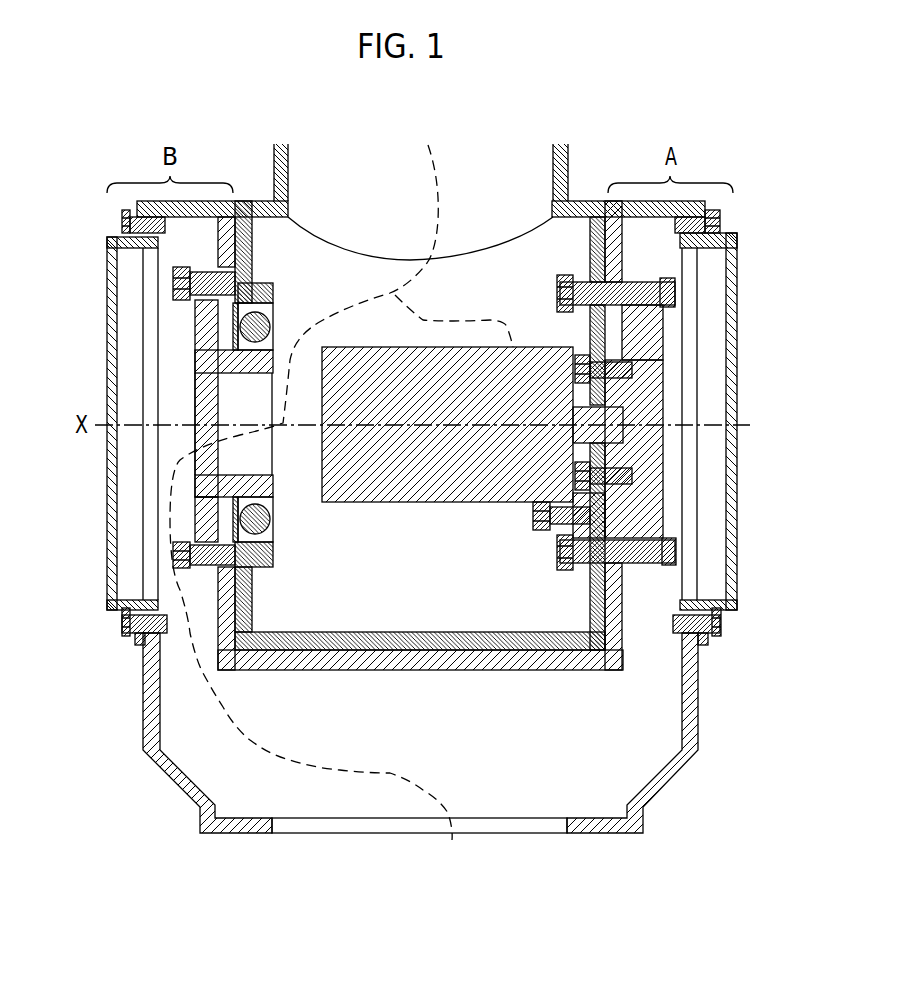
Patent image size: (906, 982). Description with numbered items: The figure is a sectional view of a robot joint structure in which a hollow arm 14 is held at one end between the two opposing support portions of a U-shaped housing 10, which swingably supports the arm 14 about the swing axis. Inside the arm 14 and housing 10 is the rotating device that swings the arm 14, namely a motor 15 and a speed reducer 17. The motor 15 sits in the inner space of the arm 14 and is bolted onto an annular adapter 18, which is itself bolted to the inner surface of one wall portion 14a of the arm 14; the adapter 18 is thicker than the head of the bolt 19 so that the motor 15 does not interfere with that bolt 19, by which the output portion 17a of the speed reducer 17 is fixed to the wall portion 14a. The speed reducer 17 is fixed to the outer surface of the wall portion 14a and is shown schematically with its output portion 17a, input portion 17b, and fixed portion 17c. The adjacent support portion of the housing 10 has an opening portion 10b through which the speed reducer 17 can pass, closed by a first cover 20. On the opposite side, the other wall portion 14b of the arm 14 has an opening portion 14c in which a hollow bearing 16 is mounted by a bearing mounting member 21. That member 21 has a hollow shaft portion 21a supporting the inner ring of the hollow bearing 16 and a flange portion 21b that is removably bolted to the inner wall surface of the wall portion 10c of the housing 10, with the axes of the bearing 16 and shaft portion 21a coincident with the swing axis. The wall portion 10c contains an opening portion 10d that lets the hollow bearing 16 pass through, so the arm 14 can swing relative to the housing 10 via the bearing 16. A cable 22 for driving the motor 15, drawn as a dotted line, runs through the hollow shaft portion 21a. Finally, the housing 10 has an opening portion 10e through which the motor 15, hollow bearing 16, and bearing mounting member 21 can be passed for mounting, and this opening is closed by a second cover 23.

The housing 10 is at (142, 716).
The opening portion 10b is at (690, 573).
The wall portion 10c is at (223, 620).
The opening portion 10d is at (207, 528).
The opening portion 10e is at (143, 577).
The arm 14 is at (272, 178).
The wall portion 14a is at (590, 613).
The wall portion 14b is at (250, 590).
The opening portion 14c is at (274, 550).
The motor 15 is at (470, 482).
The hollow bearing 16 is at (255, 520).
The speed reducer 17 is at (665, 403).
The output portion 17a is at (655, 385).
The input portion 17b is at (643, 432).
The fixed portion 17c is at (653, 273).
The adapter 18 is at (590, 520).
The bolt 19 is at (630, 480).
The first cover 20 is at (737, 540).
The bearing mounting member 21 is at (196, 322).
The hollow shaft portion 21a is at (262, 493).
The flange portion 21b is at (208, 518).
The cable 22 is at (440, 200).
The second cover 23 is at (107, 550).